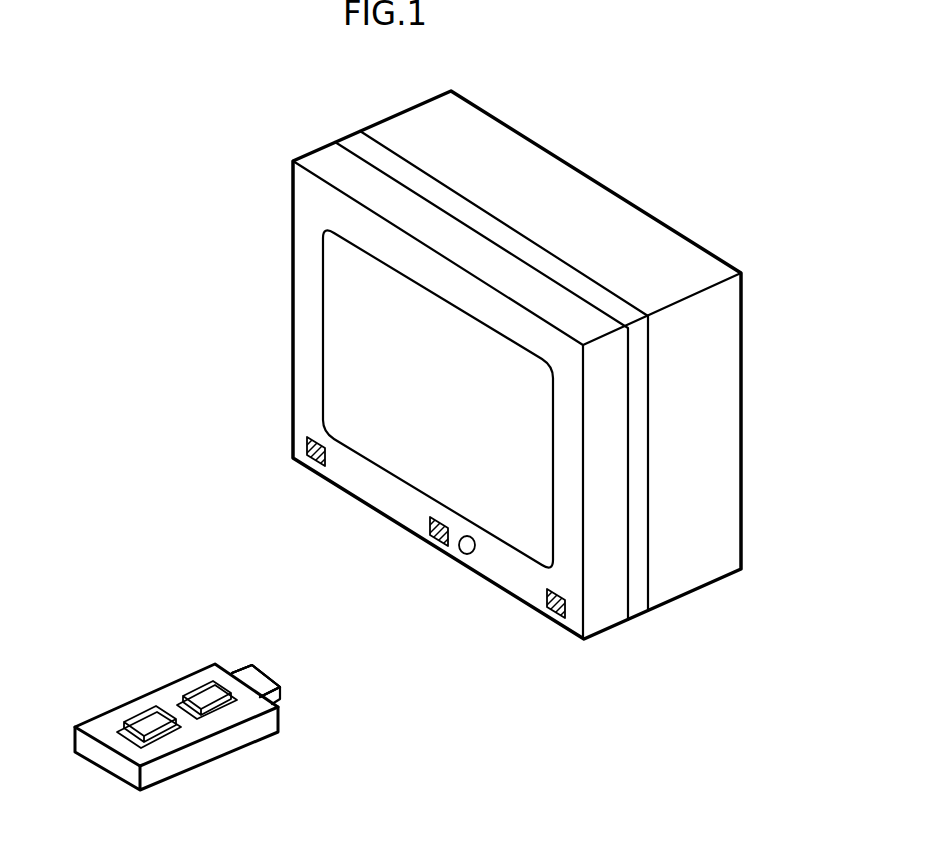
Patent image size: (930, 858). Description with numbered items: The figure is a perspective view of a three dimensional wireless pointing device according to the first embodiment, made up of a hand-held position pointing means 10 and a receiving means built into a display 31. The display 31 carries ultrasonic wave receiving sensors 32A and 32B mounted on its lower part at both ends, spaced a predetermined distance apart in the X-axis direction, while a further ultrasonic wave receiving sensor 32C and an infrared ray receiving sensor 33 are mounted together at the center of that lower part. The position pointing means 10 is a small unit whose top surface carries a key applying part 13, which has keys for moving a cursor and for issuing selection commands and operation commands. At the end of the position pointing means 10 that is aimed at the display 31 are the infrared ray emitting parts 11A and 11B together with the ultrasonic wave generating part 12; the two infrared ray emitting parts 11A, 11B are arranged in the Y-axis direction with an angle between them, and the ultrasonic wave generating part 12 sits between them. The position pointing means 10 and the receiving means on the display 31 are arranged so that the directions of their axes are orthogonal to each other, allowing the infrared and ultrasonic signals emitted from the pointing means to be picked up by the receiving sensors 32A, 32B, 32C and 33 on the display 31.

The memory card / portable device 10 is at (93, 726).
The infrared ray emitting part 11A is at (253, 678).
The infrared ray emitting part 11B is at (256, 681).
The ultrasonic wave generating part 12 is at (256, 681).
The key applying part 13 is at (210, 698).
The display 31 is at (741, 423).
The ultrasonic wave receiving sensor 32A is at (312, 466).
The ultrasonic wave receiving sensor 32B is at (553, 613).
The ultrasonic wave receiving sensor 32C is at (443, 545).
The infrared ray receiving sensor 33 is at (463, 561).